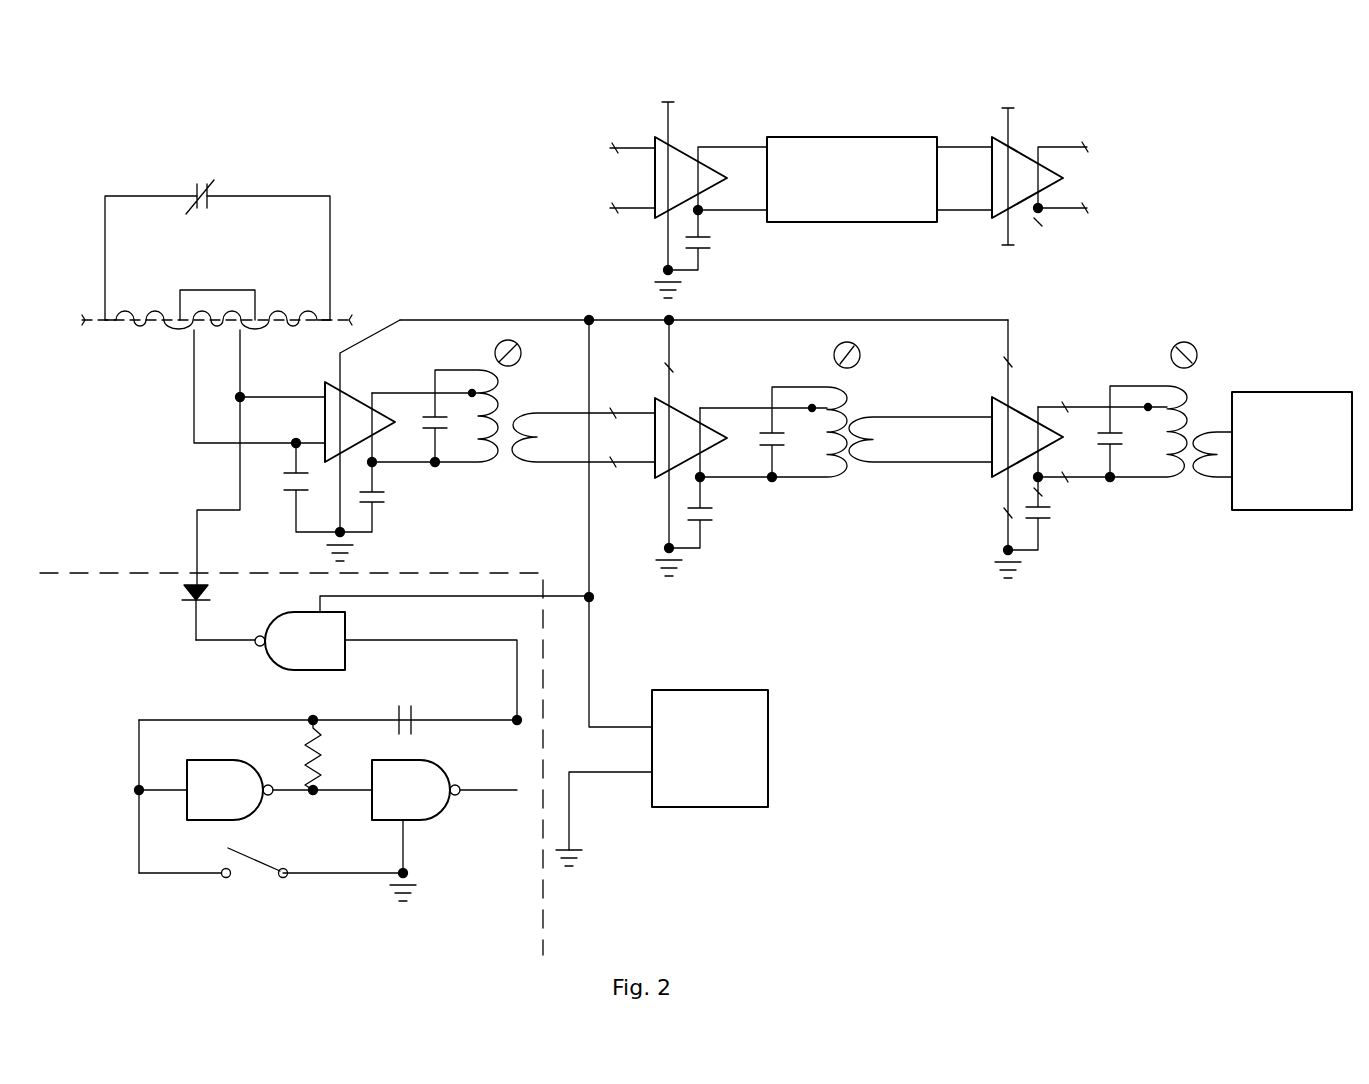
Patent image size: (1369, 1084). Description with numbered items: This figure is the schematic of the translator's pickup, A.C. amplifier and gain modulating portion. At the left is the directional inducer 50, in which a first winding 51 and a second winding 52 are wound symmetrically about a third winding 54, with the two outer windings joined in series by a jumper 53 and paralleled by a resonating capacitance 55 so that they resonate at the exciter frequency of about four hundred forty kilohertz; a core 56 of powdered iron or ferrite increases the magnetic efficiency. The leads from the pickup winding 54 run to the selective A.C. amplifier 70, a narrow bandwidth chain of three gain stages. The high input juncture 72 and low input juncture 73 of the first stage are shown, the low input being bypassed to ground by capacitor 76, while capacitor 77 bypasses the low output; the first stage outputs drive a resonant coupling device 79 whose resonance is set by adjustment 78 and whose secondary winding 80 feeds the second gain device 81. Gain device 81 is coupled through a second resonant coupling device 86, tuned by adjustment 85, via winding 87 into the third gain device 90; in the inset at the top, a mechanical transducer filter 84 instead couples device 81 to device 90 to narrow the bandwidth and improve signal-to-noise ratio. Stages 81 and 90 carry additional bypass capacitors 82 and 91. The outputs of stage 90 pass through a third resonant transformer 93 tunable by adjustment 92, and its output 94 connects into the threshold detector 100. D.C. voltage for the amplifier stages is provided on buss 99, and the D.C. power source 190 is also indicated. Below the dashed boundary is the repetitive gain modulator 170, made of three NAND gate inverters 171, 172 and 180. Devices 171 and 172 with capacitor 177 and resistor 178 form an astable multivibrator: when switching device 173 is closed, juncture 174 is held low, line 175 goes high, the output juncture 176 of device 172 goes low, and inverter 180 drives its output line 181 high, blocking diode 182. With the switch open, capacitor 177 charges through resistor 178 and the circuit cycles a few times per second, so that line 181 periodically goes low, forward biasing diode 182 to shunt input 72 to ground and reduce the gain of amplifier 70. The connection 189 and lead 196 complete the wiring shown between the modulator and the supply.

The directional inducer 50 is at (100, 148).
The first winding 51 is at (128, 305).
The second winding 52 is at (275, 300).
The jumper 53 is at (205, 290).
The third winding 54 is at (212, 352).
The resonating capacitance 55 is at (203, 185).
The core 56 is at (86, 325).
The A.C. amplifier 70 is at (868, 600).
The high input juncture 72 is at (272, 396).
The low input juncture 73 is at (266, 445).
The bypass capacitor 76 is at (285, 500).
The bypass capacitor 77 is at (386, 503).
The tuning adjustment 78 is at (523, 356).
The resonant coupling device 79 is at (465, 445).
The secondary winding 80 is at (540, 447).
The second gain device 81 is at (672, 430).
The bypass capacitor 82 is at (706, 530).
The filter 84 is at (835, 165).
The tuning adjustment 85 is at (866, 356).
The second resonant coupling device 86 is at (806, 460).
The secondary winding 87 is at (872, 470).
The third gain device 90 is at (1014, 424).
The bypass capacitor 91 is at (1048, 530).
The tuning adjustment 92 is at (1186, 338).
The third resonant transformer 93 is at (1145, 455).
The resonant transformer output 94 is at (1206, 490).
The buss 99 is at (770, 320).
The threshold detector 100 is at (1272, 412).
The repetitive gain modulator 170 is at (470, 858).
The first gain device 171 is at (210, 785).
The second gain device 172 is at (420, 788).
The switching device 173 is at (250, 884).
The input juncture 174 is at (122, 790).
The line 175 is at (312, 808).
The output juncture 176 is at (506, 716).
The capacitor 177 is at (395, 700).
The resistor 178 is at (325, 748).
The inverter 180 is at (306, 632).
The output line 181 is at (212, 650).
The diode 182 is at (170, 609).
The lead 189 is at (502, 602).
The D.C. power source 190 is at (718, 728).
The supply lead 196 is at (617, 722).